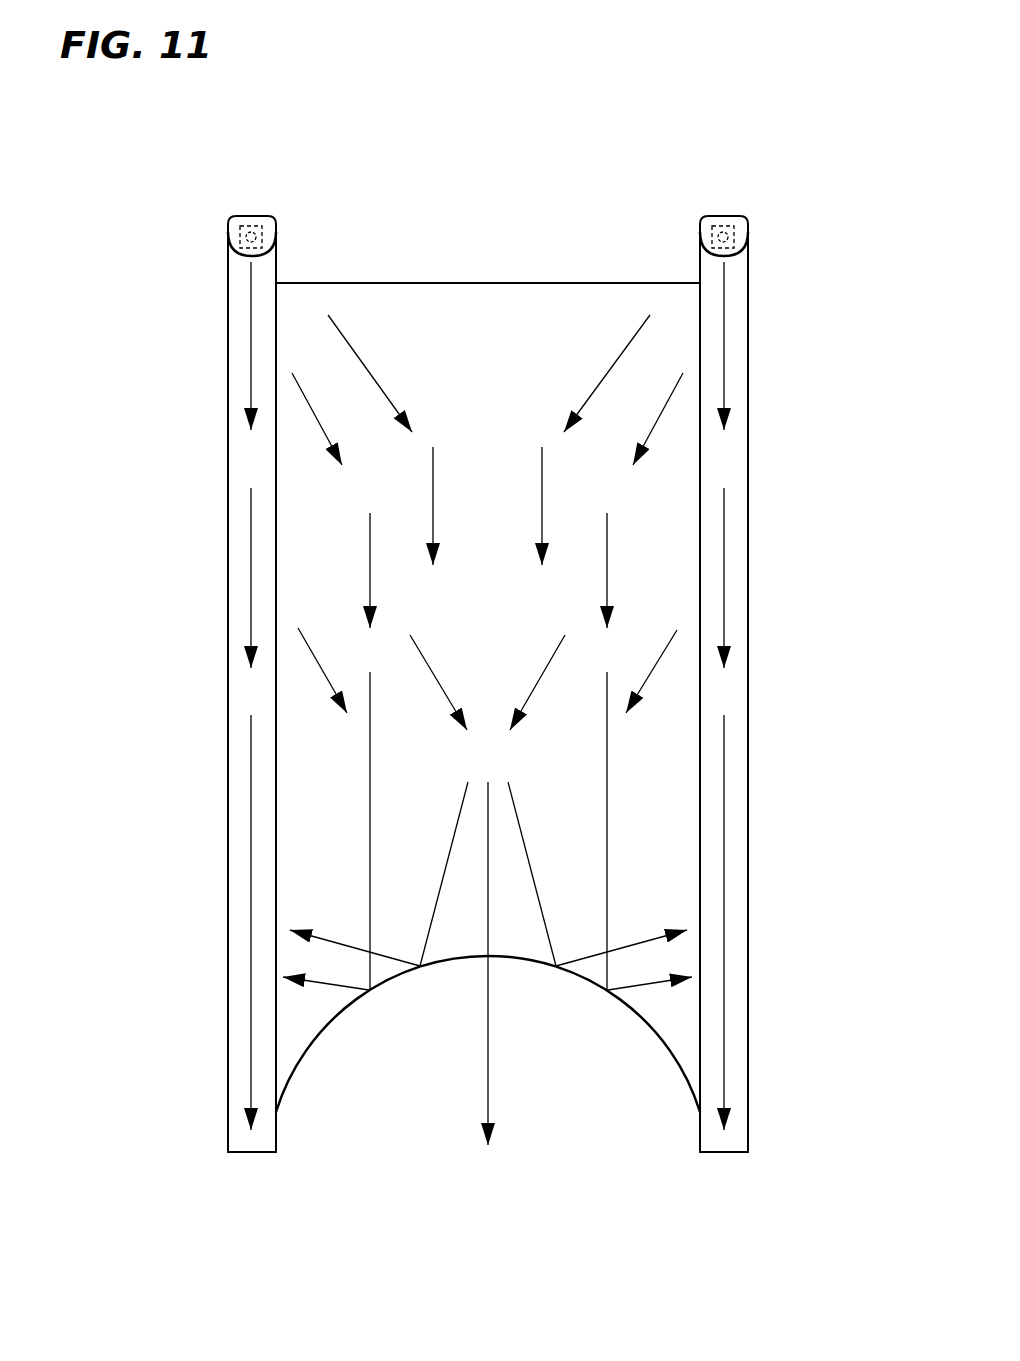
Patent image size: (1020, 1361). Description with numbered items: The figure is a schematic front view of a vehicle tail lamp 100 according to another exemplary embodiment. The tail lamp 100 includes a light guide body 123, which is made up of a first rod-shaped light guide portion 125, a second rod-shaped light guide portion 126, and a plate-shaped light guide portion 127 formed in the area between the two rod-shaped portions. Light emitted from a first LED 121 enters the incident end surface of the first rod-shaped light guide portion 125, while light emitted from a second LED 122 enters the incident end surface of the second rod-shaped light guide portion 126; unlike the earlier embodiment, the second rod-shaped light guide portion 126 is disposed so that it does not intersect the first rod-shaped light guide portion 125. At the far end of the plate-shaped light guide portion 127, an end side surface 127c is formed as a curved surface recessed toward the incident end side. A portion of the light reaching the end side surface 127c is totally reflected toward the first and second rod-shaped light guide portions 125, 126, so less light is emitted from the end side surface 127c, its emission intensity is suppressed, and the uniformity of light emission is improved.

The tail lamp 100 is at (118, 285).
The first LED 121 is at (254, 240).
The second LED 122 is at (725, 240).
The light guide body 123 is at (750, 305).
The first rod-shaped light guide portion 125 is at (228, 390).
The second rod-shaped light guide portion 126 is at (748, 392).
The plate-shaped light guide portion 127 is at (388, 492).
The end side surface 127c is at (447, 960).